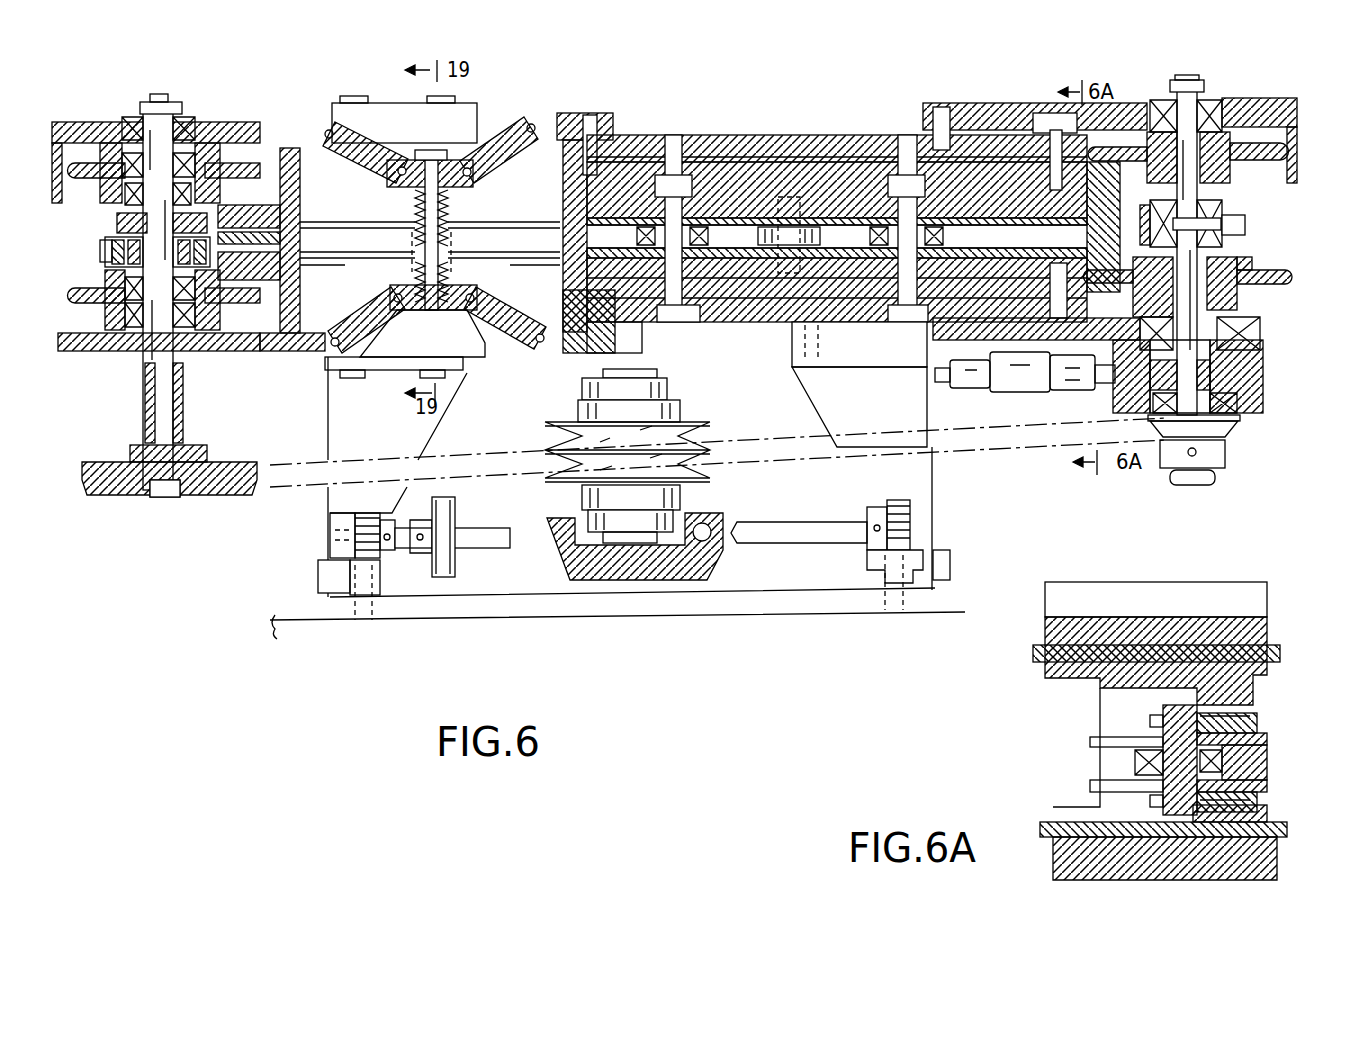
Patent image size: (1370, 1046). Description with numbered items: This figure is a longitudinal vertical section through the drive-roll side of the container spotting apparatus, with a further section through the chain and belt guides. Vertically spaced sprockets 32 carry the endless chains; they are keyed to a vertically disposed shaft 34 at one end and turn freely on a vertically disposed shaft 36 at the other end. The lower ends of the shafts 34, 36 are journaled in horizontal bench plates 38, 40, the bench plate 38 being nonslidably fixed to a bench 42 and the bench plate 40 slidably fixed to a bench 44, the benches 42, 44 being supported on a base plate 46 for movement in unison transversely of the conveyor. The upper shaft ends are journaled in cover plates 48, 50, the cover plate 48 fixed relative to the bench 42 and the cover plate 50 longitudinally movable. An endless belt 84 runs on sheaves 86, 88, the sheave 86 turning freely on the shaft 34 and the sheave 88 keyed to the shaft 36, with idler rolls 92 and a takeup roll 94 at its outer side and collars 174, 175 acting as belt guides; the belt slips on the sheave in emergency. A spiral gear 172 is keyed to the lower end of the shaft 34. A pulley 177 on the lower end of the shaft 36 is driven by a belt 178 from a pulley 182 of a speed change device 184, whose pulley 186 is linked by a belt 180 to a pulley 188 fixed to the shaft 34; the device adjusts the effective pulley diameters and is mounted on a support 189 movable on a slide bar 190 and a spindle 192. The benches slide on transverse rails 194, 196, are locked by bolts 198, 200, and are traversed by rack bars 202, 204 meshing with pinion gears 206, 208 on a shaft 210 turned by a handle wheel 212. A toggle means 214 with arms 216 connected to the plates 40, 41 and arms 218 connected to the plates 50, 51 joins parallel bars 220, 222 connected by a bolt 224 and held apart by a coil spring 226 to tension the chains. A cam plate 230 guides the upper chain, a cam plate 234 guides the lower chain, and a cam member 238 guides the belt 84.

In FIG. 6, the sprockets 32 is at (206, 150).
In FIG. 6, the shaft 34 is at (1196, 98).
In FIG. 6, the shaft 36 is at (166, 102).
In FIG. 6, the bench plate 38 is at (925, 344).
In FIG. 6, the bench plate 40 is at (293, 354).
In FIG. 6, the plate 41 is at (614, 340).
In FIG. 6, the bench 42 is at (884, 391).
In FIG. 6, the bench 44 is at (322, 414).
In FIG. 6, the base plate 46 is at (697, 612).
In FIG. 6, the cover plate 48 is at (980, 104).
In FIG. 6, the cover plate 50 is at (110, 122).
In FIG. 6A, the cover plate 50 is at (1159, 584).
In FIG. 6, the plate 51 is at (571, 118).
In FIG. 6, the endless belt 84 is at (1240, 236).
In FIG. 6, the sheave 86 is at (1242, 216).
In FIG. 6, the sheave 88 is at (107, 264).
In FIG. 6, the idler rolls 92 is at (862, 193).
In FIG. 6A, the idler rolls 92 is at (1114, 767).
In FIG. 6, the takeup roll 94 is at (748, 208).
In FIG. 6, the spiral gears 172 is at (1260, 388).
In FIG. 6, the collar 174 is at (115, 232).
In FIG. 6, the collar 175 is at (100, 266).
In FIG. 6, the pulley 177 is at (98, 462).
In FIG. 6, the belt 178 is at (454, 464).
In FIG. 6, the belt 180 is at (714, 428).
In FIG. 6, the pulley 182 is at (688, 466).
In FIG. 6, the speed change device 184 is at (541, 400).
In FIG. 6, the pulley 186 is at (668, 402).
In FIG. 6, the pulley 188 is at (1235, 435).
In FIG. 6, the support 189 is at (578, 578).
In FIG. 6, the slide bar 190 is at (547, 526).
In FIG. 6, the spindle 192 is at (724, 522).
In FIG. 6, the rail 194 is at (330, 550).
In FIG. 6, the rail 196 is at (868, 568).
In FIG. 6, the bolt 198 is at (318, 590).
In FIG. 6, the bolt 200 is at (950, 560).
In FIG. 6, the rack bar 202 is at (340, 604).
In FIG. 6, the rack bar 204 is at (876, 602).
In FIG. 6, the pinion gear 206 is at (330, 524).
In FIG. 6, the pinion gear 208 is at (897, 501).
In FIG. 6, the shaft 210 is at (460, 556).
In FIG. 6, the handle wheel 212 is at (455, 512).
In FIG. 6, the toggle means 214 is at (455, 213).
In FIG. 6, the arms 216 is at (347, 322).
In FIG. 6, the arms 218 is at (362, 100).
In FIG. 6, the bar 220 is at (414, 290).
In FIG. 6, the bar 222 is at (388, 196).
In FIG. 6, the bolt 224 is at (453, 230).
In FIG. 6, the coil spring 226 is at (453, 272).
In FIG. 6A, the cam plate 230 is at (1284, 644).
In FIG. 6A, the cam plate 234 is at (1287, 830).
In FIG. 6A, the cam member 238 is at (1270, 768).